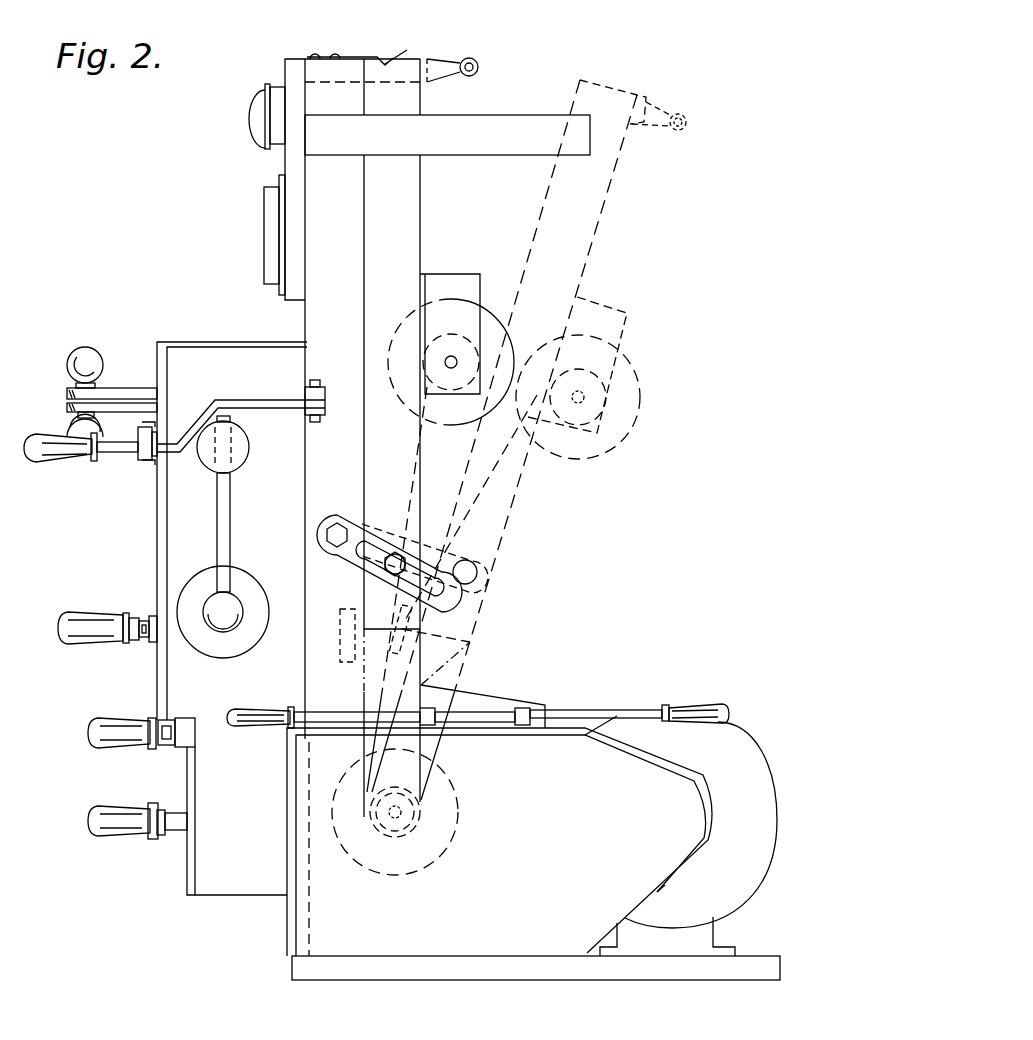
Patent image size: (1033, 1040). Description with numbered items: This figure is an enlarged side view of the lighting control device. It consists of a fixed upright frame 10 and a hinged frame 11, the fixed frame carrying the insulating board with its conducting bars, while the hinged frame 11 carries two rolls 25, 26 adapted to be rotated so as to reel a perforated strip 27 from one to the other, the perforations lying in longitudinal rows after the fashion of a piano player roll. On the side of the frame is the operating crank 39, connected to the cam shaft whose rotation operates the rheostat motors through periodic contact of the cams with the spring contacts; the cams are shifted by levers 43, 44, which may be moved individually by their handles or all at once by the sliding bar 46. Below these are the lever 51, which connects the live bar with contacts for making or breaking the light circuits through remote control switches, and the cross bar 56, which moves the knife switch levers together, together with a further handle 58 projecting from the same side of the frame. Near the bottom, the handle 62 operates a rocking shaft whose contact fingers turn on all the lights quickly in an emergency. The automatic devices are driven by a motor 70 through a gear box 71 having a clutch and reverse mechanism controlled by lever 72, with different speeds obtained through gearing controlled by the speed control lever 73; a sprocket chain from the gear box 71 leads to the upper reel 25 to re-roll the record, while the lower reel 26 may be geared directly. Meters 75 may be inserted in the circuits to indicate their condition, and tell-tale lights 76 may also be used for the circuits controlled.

The fixed upright frame 10 is at (373, 472).
The hinged frame 11 is at (525, 438).
The roll 25 is at (514, 366).
The roll 26 is at (395, 812).
The perforated strip 27 is at (480, 492).
The operating crank 39 is at (229, 548).
The lever 43 is at (100, 437).
The lever 44 is at (95, 355).
The sliding bar 46 is at (145, 465).
The lever 51 is at (90, 645).
The cross bar 56 is at (185, 722).
The handle 58 is at (123, 745).
The handle 62 is at (105, 828).
The motor 70 is at (688, 839).
The gear box 71 is at (533, 854).
The lever 72 is at (260, 712).
The lever 73 is at (607, 706).
The meters 75 is at (262, 228).
The tell-tale lights 76 is at (253, 115).